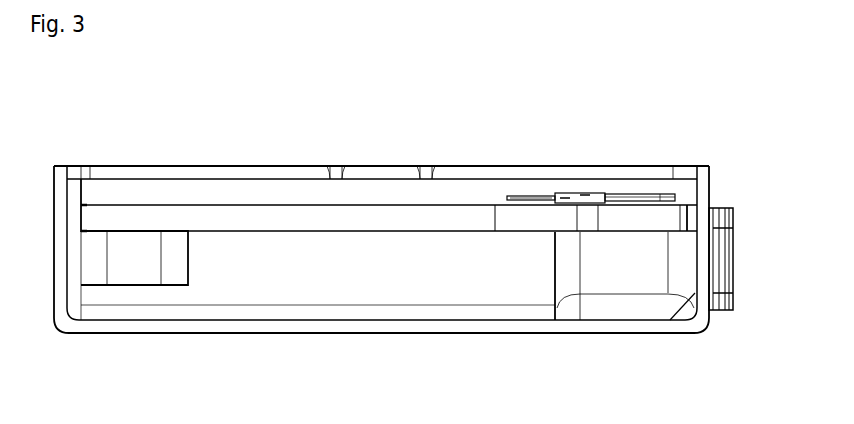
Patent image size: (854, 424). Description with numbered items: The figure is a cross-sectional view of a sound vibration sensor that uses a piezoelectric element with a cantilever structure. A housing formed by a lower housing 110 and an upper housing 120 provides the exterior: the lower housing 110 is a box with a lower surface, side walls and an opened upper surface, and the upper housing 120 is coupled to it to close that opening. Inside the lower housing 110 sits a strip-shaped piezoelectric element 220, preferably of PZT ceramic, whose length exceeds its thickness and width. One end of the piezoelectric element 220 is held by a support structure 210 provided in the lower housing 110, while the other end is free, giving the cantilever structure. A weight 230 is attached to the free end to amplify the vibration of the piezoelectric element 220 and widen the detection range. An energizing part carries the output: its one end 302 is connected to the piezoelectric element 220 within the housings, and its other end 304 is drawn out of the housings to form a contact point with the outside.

The lower housing 110 is at (263, 327).
The upper housing 120 is at (647, 172).
The support structure 210 is at (562, 274).
The piezoelectric element 220 is at (346, 224).
The weight 230 is at (135, 273).
The one end of the energizing part 302 is at (592, 195).
The other end of the energizing part 304 is at (730, 257).